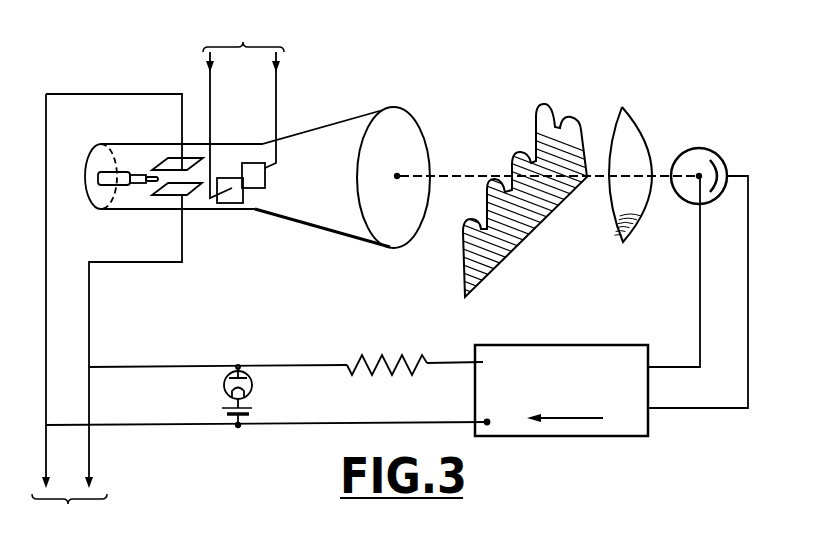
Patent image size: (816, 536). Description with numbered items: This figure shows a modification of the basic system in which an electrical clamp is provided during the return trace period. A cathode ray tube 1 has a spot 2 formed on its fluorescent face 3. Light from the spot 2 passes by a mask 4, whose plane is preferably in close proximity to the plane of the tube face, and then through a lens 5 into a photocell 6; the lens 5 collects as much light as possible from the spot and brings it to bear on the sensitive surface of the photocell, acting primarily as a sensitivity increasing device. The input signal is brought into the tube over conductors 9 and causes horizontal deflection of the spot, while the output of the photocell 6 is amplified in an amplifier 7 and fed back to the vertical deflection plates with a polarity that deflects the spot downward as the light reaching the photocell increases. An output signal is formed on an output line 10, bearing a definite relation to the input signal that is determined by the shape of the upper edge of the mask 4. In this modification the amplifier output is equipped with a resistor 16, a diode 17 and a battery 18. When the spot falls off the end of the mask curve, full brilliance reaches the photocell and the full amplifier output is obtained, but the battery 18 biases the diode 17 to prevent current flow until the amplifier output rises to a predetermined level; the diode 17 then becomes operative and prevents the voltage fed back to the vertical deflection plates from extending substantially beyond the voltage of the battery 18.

The cathode ray tube 1 is at (347, 122).
The spot 2 is at (400, 174).
The fluorescent face 3 is at (410, 123).
The mask 4 is at (555, 115).
The lens 5 is at (630, 122).
The photocell 6 is at (699, 176).
The amplifier 7 is at (595, 347).
The conductors 9 is at (276, 88).
The output line 10 is at (89, 449).
The resistor 16 is at (390, 355).
The diode 17 is at (224, 385).
The battery 18 is at (220, 415).